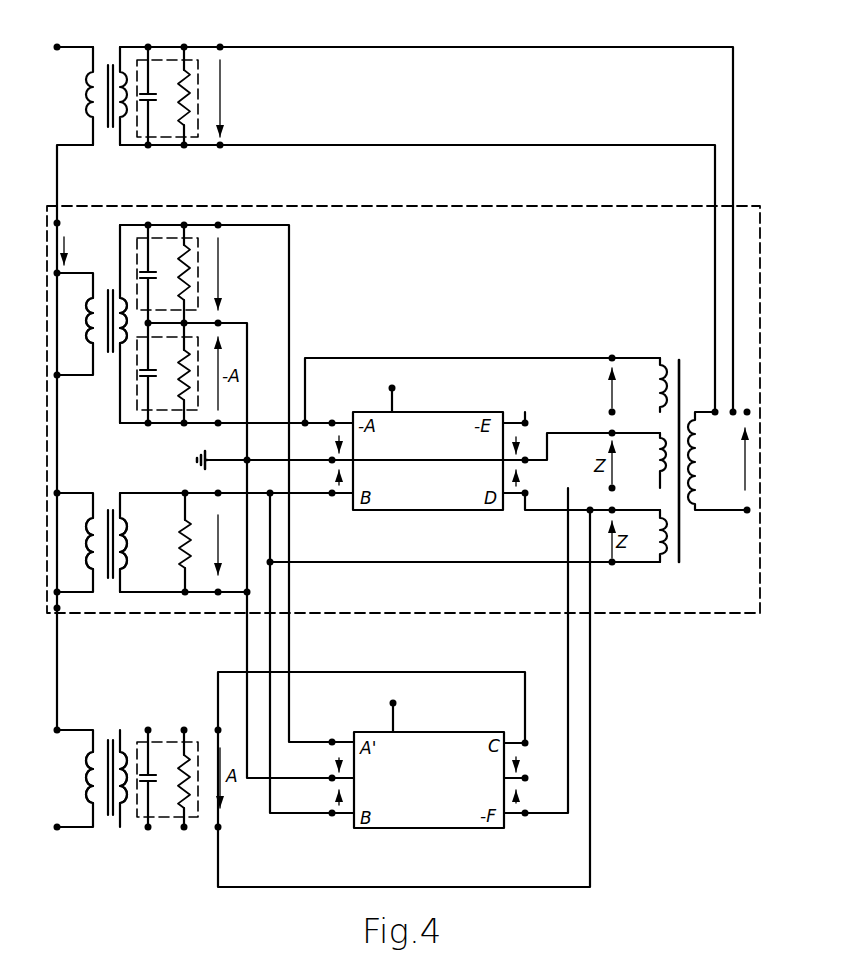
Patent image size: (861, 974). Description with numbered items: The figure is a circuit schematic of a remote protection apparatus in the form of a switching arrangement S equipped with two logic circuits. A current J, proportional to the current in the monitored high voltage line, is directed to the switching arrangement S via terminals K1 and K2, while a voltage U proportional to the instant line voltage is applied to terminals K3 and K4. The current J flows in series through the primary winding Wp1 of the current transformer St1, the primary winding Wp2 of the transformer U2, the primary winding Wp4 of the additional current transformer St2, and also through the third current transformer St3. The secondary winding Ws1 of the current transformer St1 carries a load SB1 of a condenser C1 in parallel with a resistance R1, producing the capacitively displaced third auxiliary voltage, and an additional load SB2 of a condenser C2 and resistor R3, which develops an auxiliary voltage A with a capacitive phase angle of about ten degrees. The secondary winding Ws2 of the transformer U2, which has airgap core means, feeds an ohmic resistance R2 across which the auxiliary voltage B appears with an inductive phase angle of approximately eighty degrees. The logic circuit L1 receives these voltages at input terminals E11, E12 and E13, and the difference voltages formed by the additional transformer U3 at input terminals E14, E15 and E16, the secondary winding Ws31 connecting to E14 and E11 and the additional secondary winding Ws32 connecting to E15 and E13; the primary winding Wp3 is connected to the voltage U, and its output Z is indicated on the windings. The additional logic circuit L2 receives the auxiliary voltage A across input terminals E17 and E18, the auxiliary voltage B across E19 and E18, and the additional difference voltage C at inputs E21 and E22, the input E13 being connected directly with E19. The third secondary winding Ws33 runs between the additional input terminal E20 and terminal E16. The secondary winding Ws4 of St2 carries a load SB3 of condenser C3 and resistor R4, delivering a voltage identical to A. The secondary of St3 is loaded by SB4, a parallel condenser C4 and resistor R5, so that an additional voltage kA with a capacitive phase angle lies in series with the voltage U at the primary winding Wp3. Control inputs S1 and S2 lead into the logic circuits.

The switching arrangement S is at (748, 206).
The third current transformer St3 is at (110, 62).
The load SB4 is at (176, 58).
The condenser C4 is at (157, 96).
The resistor R5 is at (171, 96).
The additional voltage kA is at (234, 98).
The terminal K1 is at (67, 216).
The current J is at (72, 251).
The current transformer St1 is at (108, 294).
The primary winding Wp1 is at (89, 335).
The secondary winding Ws1 is at (122, 365).
The additional load SB2 is at (176, 236).
The condenser C2 is at (158, 274).
The resistor R3 is at (171, 274).
The auxiliary voltage A is at (227, 274).
The load SB1 is at (166, 414).
The resistance R1 is at (171, 373).
The condenser C1 is at (158, 373).
The logic circuit L1 is at (447, 422).
The control input S1 is at (397, 377).
The input terminal E11 is at (330, 420).
The input terminal E12 is at (330, 459).
The input terminal E13 is at (332, 496).
The input terminal E14 is at (524, 420).
The input terminal E15 is at (524, 508).
The input terminal E16 is at (529, 464).
The secondary winding Ws31 is at (672, 352).
The third secondary winding Ws33 is at (657, 464).
The additional secondary winding Ws32 is at (662, 564).
The signal Z is at (604, 388).
The additional transformer U3 is at (681, 392).
The primary winding Wp3 is at (704, 470).
The terminal K3 is at (749, 401).
The terminal K4 is at (746, 525).
The voltage U is at (738, 459).
The transformer U2 is at (110, 506).
The primary winding Wp2 is at (88, 562).
The secondary winding Ws2 is at (128, 551).
The ohmic resistance R2 is at (170, 542).
The auxiliary voltage B is at (226, 545).
The terminal K2 is at (60, 612).
The additional logic circuit L2 is at (448, 740).
The control input S2 is at (398, 692).
The input terminal E17 is at (330, 740).
The input terminal E18 is at (330, 778).
The input terminal E19 is at (332, 816).
The additional input terminal E20 is at (524, 818).
The input terminal E21 is at (536, 736).
The input terminal E22 is at (536, 772).
The additional current transformer St2 is at (112, 746).
The primary winding Wp4 is at (88, 794).
The secondary winding Ws4 is at (124, 820).
The load SB3 is at (176, 818).
The resistor R4 is at (174, 778).
The condenser C3 is at (159, 778).